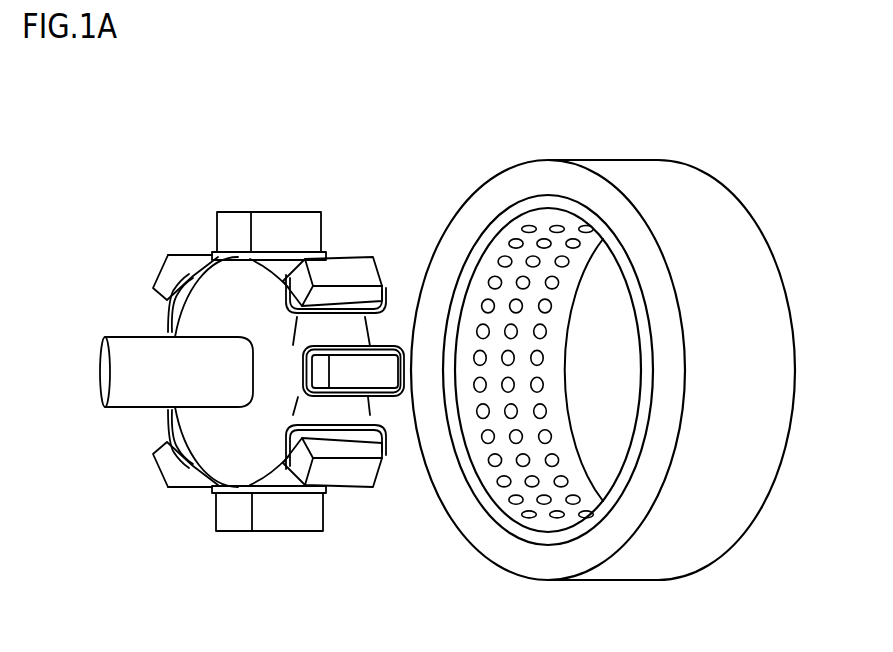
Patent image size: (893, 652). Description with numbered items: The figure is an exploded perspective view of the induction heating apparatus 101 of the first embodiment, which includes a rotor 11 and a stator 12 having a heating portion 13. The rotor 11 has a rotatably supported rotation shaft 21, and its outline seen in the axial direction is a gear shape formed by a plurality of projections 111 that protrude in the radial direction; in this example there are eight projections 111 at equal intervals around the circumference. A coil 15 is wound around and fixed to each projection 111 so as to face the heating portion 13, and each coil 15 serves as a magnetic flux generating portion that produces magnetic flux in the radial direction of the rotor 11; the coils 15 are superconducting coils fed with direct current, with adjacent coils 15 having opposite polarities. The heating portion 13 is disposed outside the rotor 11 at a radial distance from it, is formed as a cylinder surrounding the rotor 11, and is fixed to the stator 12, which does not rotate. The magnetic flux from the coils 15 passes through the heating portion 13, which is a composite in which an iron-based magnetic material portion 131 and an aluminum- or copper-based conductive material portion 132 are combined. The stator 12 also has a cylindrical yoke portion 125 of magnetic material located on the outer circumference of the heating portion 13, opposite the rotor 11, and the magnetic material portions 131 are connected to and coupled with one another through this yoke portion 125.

The induction heating apparatus 101 is at (295, 166).
The rotor 11 is at (208, 278).
The coil 15 is at (288, 251).
The rotation shaft 21 is at (140, 400).
The projection 111 is at (322, 472).
The stator 12 is at (735, 190).
The yoke portion 125 is at (650, 177).
The heating portion 13 is at (580, 202).
The magnetic material portion 131 is at (523, 233).
The conductive material portion 132 is at (500, 247).